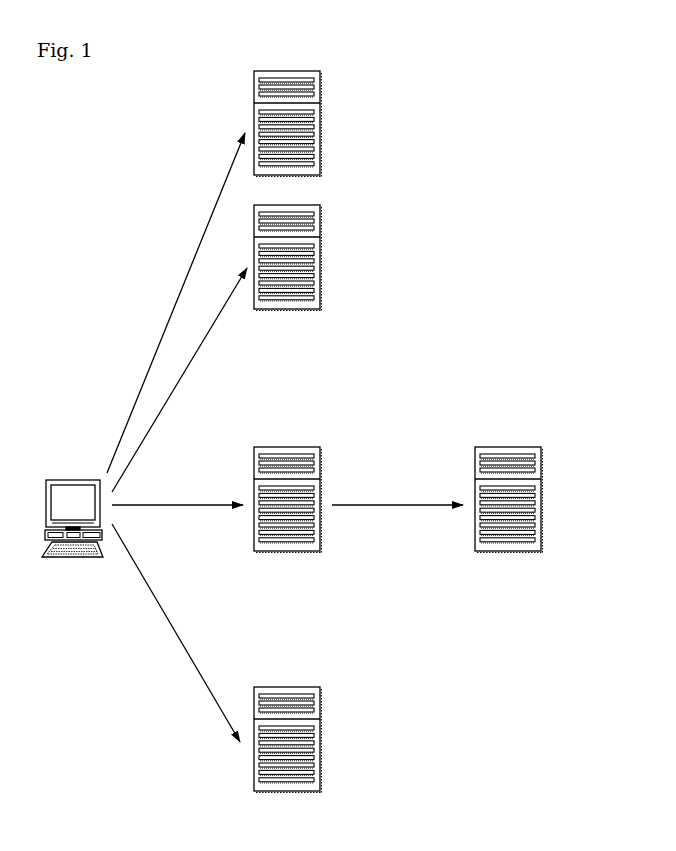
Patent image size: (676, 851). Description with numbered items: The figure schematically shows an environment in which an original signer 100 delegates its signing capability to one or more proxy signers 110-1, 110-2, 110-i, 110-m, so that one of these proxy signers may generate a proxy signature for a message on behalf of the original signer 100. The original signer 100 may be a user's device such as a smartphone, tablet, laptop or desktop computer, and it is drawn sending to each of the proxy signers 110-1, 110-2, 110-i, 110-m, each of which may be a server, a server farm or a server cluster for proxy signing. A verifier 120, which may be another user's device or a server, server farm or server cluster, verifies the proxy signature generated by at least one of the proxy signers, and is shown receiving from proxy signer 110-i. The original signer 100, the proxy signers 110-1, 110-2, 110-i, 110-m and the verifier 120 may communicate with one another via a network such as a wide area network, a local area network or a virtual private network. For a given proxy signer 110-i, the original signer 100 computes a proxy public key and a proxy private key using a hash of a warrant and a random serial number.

The original signer 100 is at (73, 481).
The proxy signer 110-1 is at (322, 89).
The proxy signer 110-2 is at (322, 223).
The proxy signer 110-i is at (322, 467).
The proxy signer 110-m is at (322, 705).
The verifier 120 is at (543, 466).